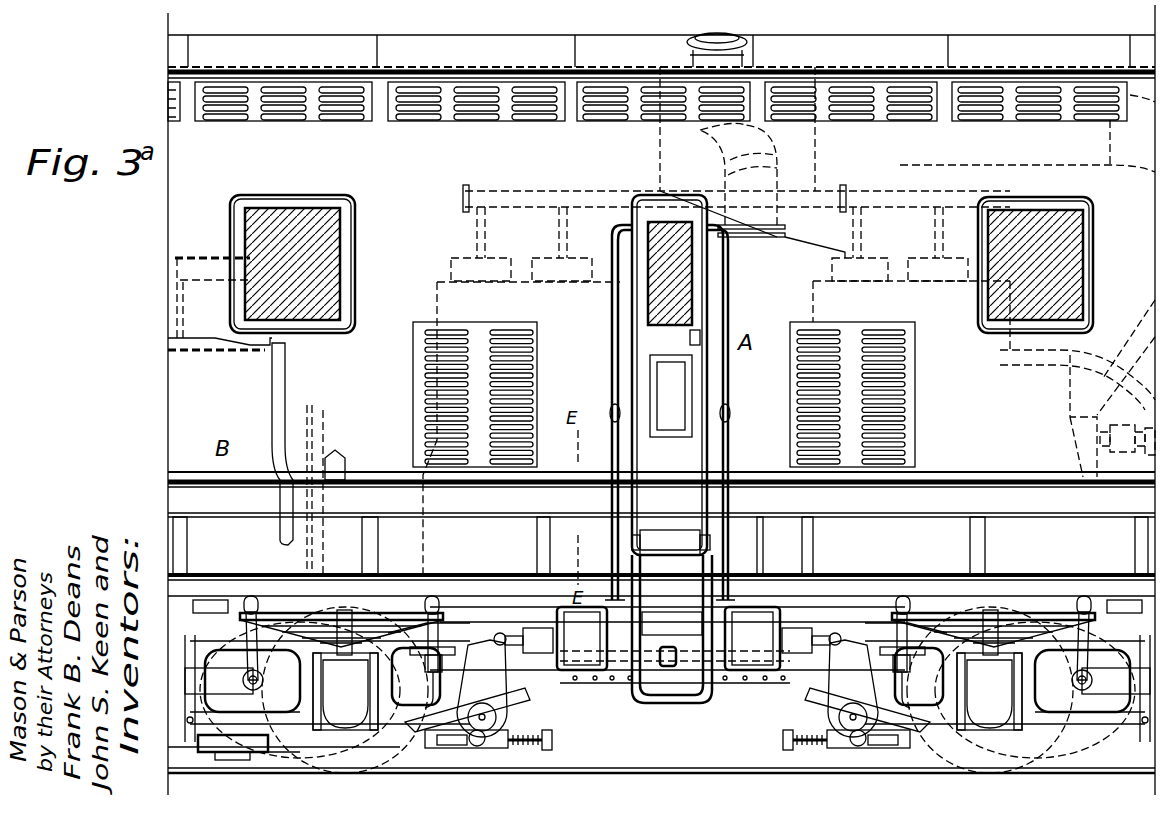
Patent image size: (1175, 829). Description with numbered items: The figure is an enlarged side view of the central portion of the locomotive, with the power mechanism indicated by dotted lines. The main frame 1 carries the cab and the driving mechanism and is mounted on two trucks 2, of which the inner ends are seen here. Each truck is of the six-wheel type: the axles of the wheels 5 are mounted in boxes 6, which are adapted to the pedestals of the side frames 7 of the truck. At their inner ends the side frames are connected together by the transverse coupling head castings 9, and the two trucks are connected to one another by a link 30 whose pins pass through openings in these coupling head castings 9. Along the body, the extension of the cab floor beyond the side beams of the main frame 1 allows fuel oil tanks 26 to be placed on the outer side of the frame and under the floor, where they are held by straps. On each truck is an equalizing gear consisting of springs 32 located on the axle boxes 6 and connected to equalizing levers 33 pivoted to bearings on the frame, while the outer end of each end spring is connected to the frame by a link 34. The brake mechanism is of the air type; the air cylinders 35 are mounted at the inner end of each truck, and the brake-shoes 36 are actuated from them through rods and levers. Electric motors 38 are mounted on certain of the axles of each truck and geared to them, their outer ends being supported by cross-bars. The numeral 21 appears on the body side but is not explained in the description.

The frame 1 is at (602, 498).
The truck 2 is at (667, 691).
The wheel 5 is at (392, 740).
The box 6 is at (667, 691).
The side frame 7 is at (708, 644).
The transverse coupling head casting 9 is at (628, 680).
The body side wall 21 is at (647, 274).
The fuel oil tank 26 is at (661, 554).
The link 30 is at (667, 668).
The spring 32 is at (667, 620).
The equalizing lever 33 is at (667, 653).
The link 34 is at (445, 624).
The air cylinder 35 is at (668, 638).
The brake-shoe 36 is at (667, 686).
The electric motor 38 is at (242, 758).